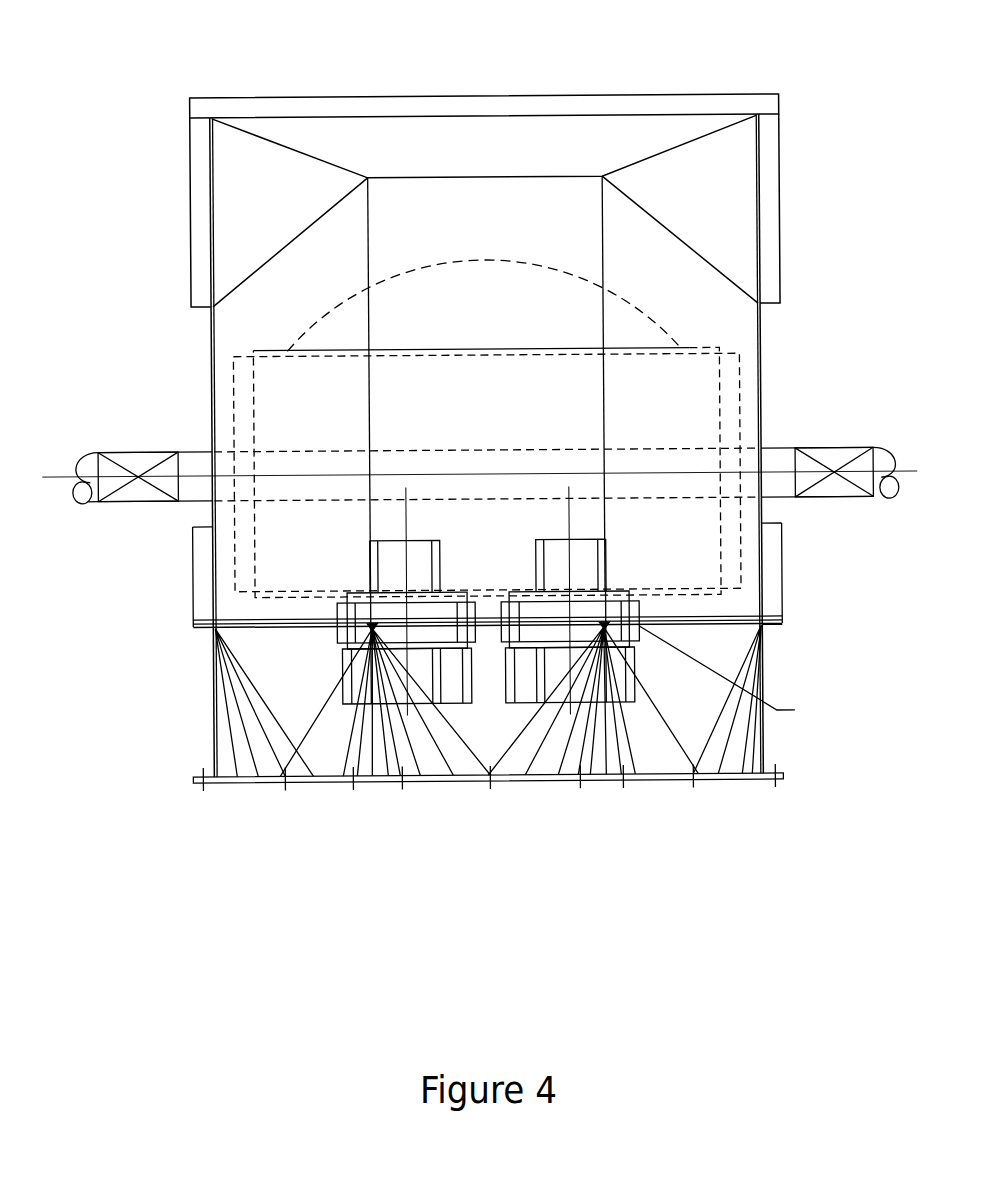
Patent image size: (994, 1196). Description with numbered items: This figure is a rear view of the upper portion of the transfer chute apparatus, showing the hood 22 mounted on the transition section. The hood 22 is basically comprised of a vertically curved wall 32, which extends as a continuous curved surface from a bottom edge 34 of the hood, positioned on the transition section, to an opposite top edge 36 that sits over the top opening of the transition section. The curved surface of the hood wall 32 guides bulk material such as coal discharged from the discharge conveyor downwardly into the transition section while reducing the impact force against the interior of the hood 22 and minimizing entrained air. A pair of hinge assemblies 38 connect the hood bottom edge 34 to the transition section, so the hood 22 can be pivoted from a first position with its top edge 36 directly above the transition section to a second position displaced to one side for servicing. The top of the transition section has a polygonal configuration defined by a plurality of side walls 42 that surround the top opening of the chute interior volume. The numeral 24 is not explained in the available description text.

The hood 22 is at (528, 137).
The housing side wall 24 is at (212, 722).
The vertically curved wall 32 is at (422, 203).
The bottom edge 34 is at (680, 95).
The top edge 36 is at (282, 626).
The hinge assemblies 38 is at (343, 607).
The side walls 42 is at (700, 727).